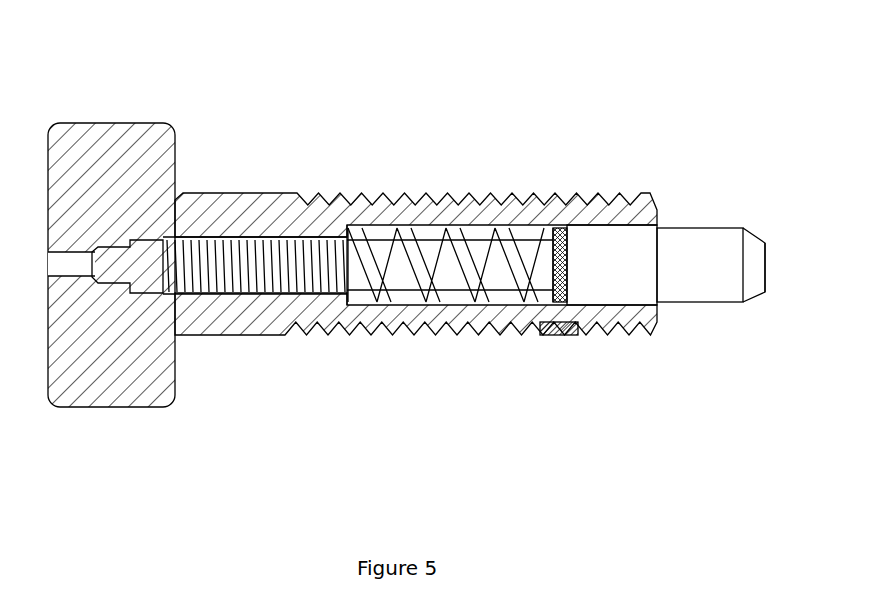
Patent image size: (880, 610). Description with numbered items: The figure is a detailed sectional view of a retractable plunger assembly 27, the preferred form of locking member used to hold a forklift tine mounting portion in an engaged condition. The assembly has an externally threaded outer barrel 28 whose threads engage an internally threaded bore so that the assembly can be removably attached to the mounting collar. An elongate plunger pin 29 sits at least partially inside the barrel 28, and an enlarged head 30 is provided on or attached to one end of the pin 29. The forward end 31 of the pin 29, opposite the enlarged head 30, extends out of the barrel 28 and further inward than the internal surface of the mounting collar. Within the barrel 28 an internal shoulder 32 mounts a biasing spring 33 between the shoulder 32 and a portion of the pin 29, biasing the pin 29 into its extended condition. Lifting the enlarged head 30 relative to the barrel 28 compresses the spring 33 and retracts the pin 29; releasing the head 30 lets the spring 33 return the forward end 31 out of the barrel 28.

The retractable plunger assembly 27 is at (503, 120).
The externally threaded outer barrel 28 is at (281, 300).
The elongate plunger pin 29 is at (705, 210).
The enlarged head 30 is at (93, 110).
The forward end 31 is at (768, 295).
The internal shoulder 32 is at (349, 226).
The biasing spring 33 is at (447, 267).